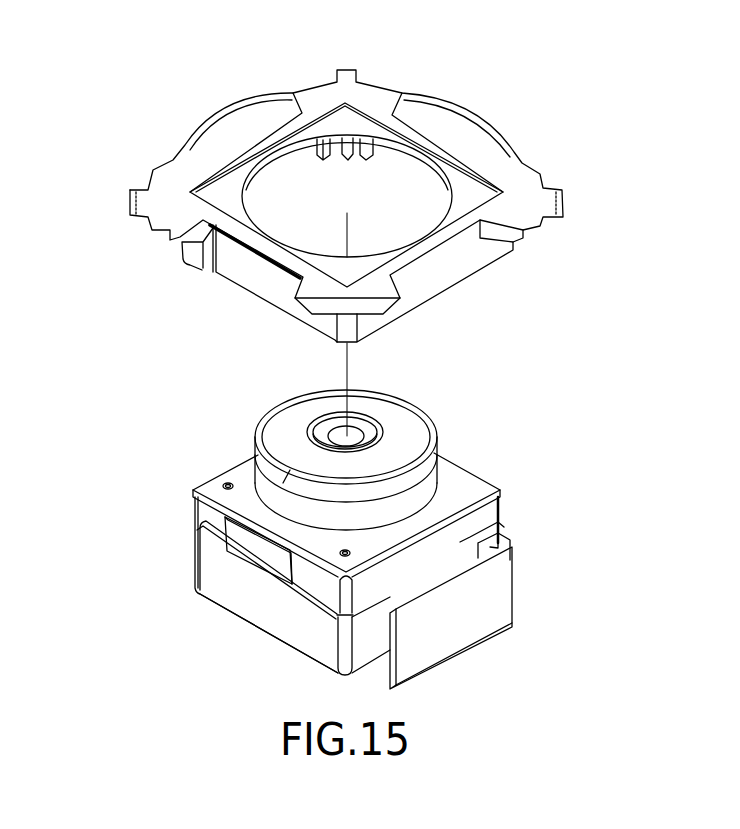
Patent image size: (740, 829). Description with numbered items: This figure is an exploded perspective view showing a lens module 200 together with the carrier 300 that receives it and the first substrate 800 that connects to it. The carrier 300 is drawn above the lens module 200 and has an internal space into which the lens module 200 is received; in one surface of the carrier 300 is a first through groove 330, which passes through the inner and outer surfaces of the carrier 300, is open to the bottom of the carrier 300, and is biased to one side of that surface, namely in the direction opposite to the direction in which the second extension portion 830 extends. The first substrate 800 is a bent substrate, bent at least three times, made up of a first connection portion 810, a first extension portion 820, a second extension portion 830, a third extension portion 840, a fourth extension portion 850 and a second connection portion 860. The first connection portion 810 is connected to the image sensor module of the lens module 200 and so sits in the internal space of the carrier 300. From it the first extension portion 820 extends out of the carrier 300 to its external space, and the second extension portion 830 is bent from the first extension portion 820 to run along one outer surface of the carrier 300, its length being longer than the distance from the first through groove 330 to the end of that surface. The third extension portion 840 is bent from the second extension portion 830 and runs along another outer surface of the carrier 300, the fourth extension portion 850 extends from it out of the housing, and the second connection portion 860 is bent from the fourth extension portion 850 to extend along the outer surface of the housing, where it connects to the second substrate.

The carrier 300 is at (418, 76).
The first through groove 330 is at (213, 256).
The lens module 200 is at (429, 443).
The first substrate 800 is at (218, 607).
The first connection portion 810 is at (255, 553).
The first extension portion 820 is at (212, 518).
The second extension portion 830 is at (265, 608).
The third extension portion 840 is at (462, 545).
The fourth extension portion 850 is at (500, 545).
The second connection portion 860 is at (503, 593).